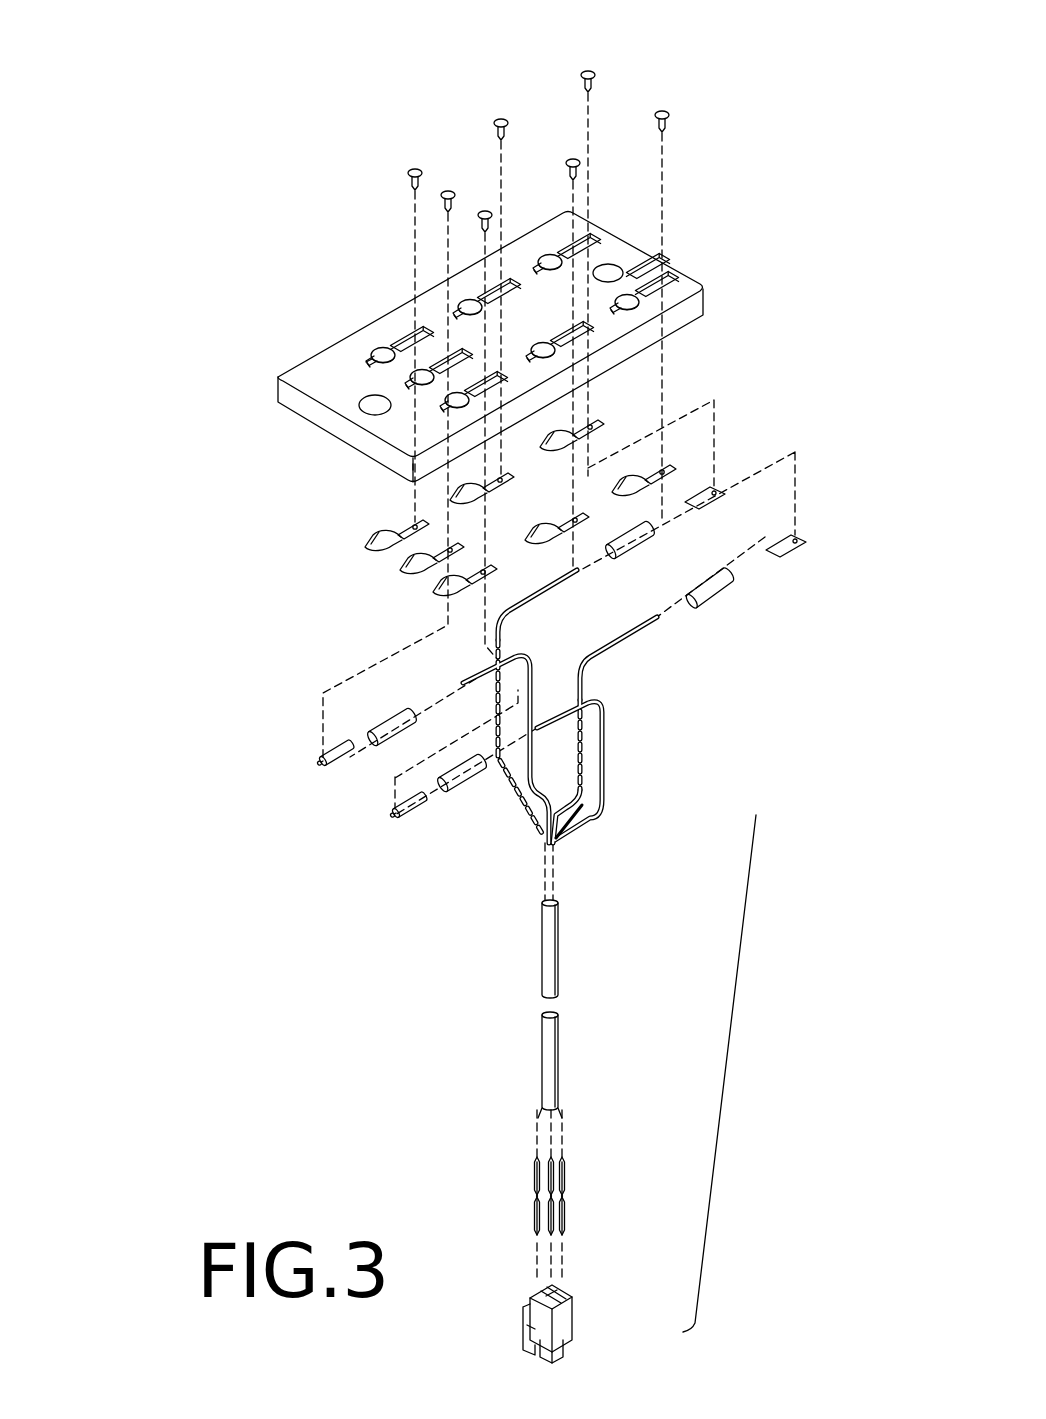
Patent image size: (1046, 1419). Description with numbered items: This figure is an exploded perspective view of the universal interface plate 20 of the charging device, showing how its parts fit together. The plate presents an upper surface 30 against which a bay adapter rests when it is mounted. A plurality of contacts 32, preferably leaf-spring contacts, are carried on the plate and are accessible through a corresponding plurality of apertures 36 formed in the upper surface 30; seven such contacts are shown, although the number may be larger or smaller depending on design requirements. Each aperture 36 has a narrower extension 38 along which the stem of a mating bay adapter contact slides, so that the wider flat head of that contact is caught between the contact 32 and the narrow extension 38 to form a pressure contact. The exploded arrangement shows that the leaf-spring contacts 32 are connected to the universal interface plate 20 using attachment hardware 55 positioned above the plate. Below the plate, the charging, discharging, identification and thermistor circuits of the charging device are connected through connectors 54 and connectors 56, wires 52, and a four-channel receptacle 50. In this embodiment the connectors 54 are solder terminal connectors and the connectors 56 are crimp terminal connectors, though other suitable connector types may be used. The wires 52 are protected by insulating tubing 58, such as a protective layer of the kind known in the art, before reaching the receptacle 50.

The universal interface plate 20 is at (196, 385).
The upper surface 30 is at (328, 373).
The contacts 32 is at (380, 528).
The apertures 36 is at (385, 347).
The narrower extensions 38 is at (369, 357).
The four-channel receptacle 50 is at (562, 1323).
The wires 52 is at (535, 790).
The connectors 54 is at (333, 777).
The attachment hardware 55 is at (594, 72).
The connectors 56 is at (716, 492).
The insulating tubing 58 is at (550, 1057).